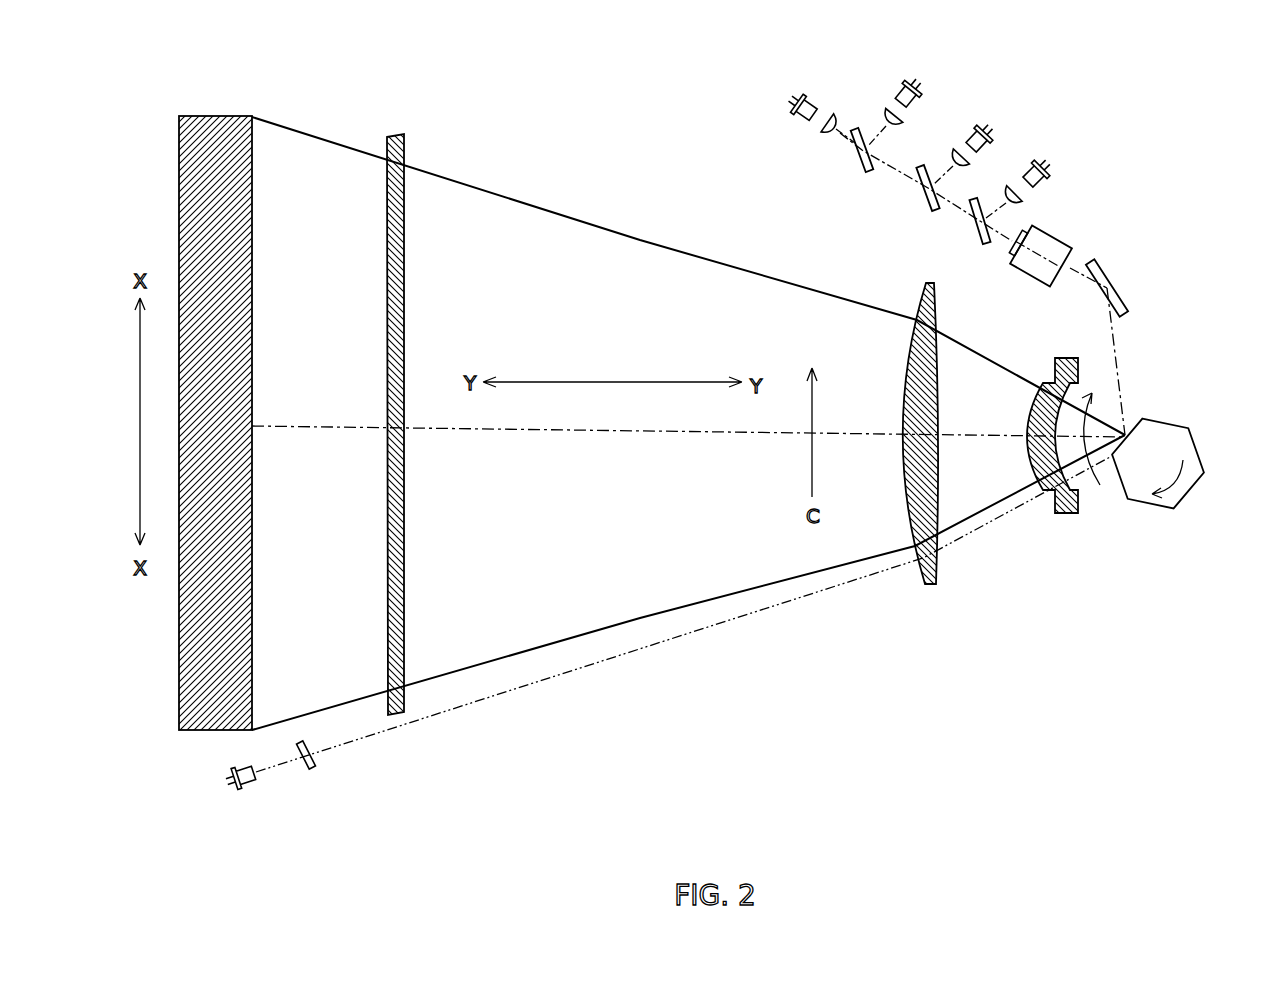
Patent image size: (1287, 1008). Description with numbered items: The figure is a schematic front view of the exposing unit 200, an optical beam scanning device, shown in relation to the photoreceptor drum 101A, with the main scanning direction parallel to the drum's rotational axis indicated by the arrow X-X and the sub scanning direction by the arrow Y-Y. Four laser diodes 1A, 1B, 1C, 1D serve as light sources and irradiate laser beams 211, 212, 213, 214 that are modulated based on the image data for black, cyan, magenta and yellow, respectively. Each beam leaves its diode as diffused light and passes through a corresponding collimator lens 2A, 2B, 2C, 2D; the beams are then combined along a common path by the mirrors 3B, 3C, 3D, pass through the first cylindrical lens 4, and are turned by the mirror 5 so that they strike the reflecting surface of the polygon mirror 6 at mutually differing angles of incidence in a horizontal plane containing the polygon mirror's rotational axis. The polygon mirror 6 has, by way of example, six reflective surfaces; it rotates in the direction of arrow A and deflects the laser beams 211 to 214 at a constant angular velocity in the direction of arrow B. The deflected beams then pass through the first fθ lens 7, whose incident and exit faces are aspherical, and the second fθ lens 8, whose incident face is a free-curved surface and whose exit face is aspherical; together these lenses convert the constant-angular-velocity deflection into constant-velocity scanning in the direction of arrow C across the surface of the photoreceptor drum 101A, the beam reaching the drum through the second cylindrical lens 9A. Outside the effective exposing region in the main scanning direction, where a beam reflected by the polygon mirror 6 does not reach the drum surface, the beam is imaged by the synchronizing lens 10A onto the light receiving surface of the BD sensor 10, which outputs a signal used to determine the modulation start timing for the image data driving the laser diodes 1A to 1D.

The photoreceptor drum 101A is at (253, 222).
The second cylindrical lens 9A is at (406, 155).
The second fθ lens 8 is at (928, 587).
The first fθ lens 7 is at (1062, 513).
The polygon mirror 6 is at (1190, 500).
The mirror 5 is at (1125, 293).
The first cylindrical lens 4 is at (1053, 240).
The laser diode 1A is at (816, 104).
The laser diode 1B is at (899, 93).
The laser diode 1C is at (970, 140).
The laser diode 1D is at (1023, 178).
The collimator lens 2A is at (828, 138).
The collimator lens 2B is at (901, 118).
The collimator lens 2C is at (973, 160).
The collimator lens 2D is at (1022, 193).
The mirror 3B is at (860, 165).
The mirror 3C is at (927, 212).
The mirror 3D is at (977, 235).
The laser beam 211 is at (850, 138).
The laser beam 212 is at (875, 130).
The laser beam 213 is at (945, 174).
The laser beam 214 is at (997, 210).
The BD sensor 10 is at (252, 783).
The synchronizing lens 10A is at (312, 768).
The exposing unit 200 is at (1137, 131).